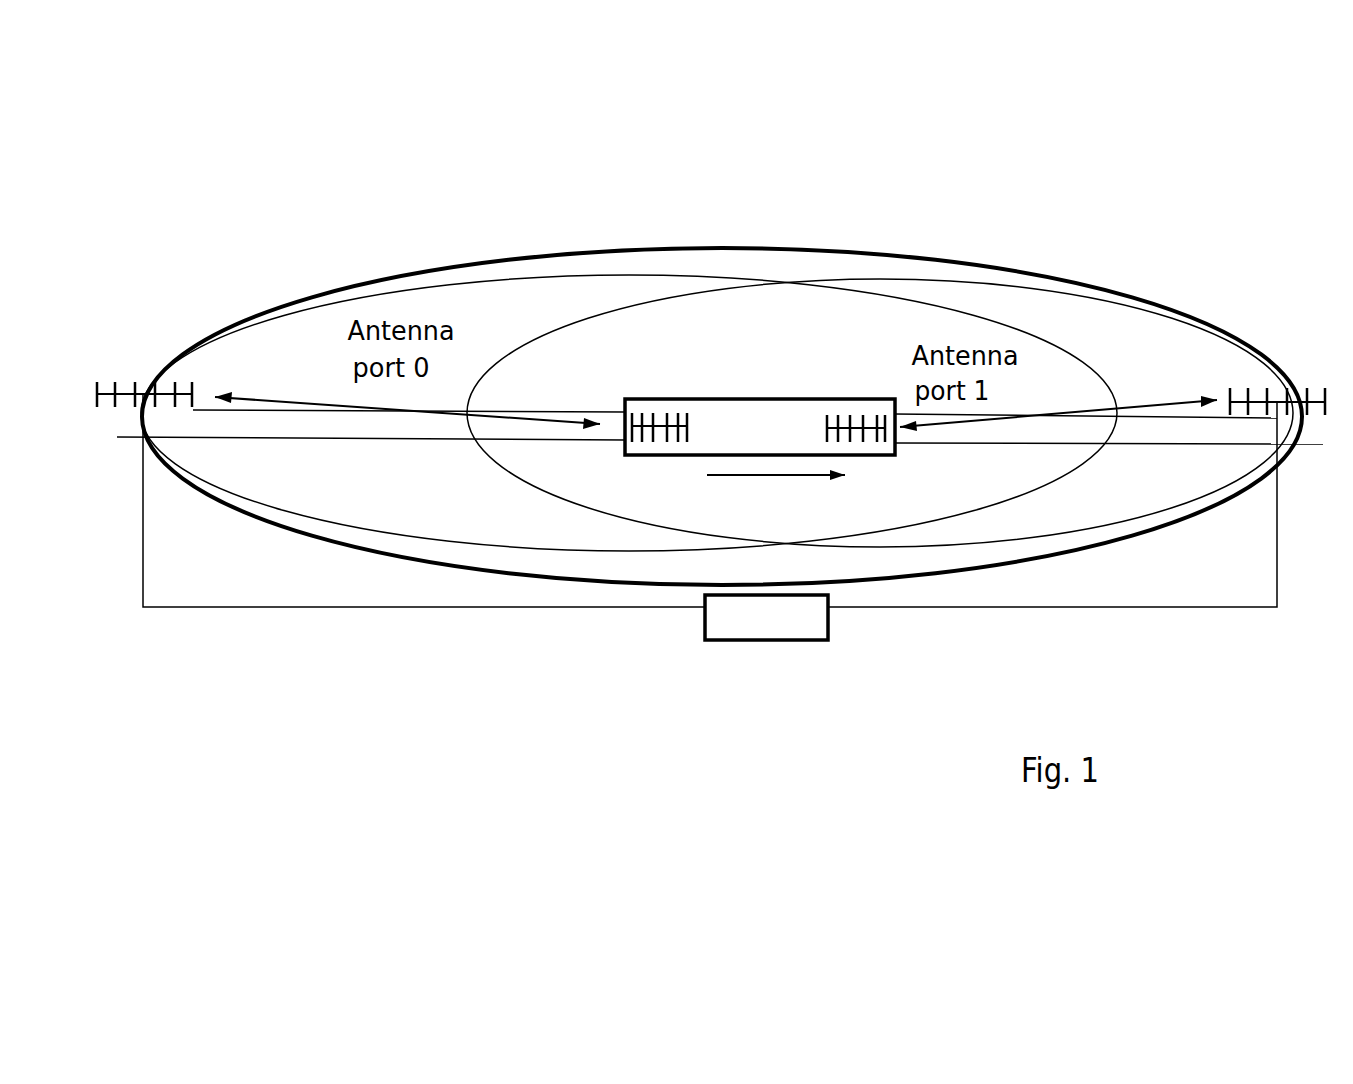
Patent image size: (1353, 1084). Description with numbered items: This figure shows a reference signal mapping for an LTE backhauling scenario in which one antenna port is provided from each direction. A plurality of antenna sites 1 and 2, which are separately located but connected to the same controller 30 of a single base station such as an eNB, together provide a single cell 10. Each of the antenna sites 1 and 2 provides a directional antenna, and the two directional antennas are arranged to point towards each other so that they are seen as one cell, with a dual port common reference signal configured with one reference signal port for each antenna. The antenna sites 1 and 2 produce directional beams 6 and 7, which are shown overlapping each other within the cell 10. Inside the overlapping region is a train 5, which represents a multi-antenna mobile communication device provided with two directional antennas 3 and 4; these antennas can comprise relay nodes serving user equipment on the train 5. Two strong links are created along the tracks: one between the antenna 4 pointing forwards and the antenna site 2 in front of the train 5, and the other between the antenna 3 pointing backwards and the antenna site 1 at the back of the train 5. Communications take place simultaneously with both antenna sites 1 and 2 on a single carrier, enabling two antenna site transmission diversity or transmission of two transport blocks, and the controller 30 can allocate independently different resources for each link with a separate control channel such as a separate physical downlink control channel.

The antenna site 1 is at (115, 381).
The antenna site 2 is at (1312, 387).
The antenna 3 is at (642, 413).
The antenna 4 is at (853, 415).
The train 5 is at (775, 398).
The beam 6 is at (305, 332).
The beam 7 is at (1123, 340).
The cell 10 is at (418, 272).
The controller 30 is at (730, 642).